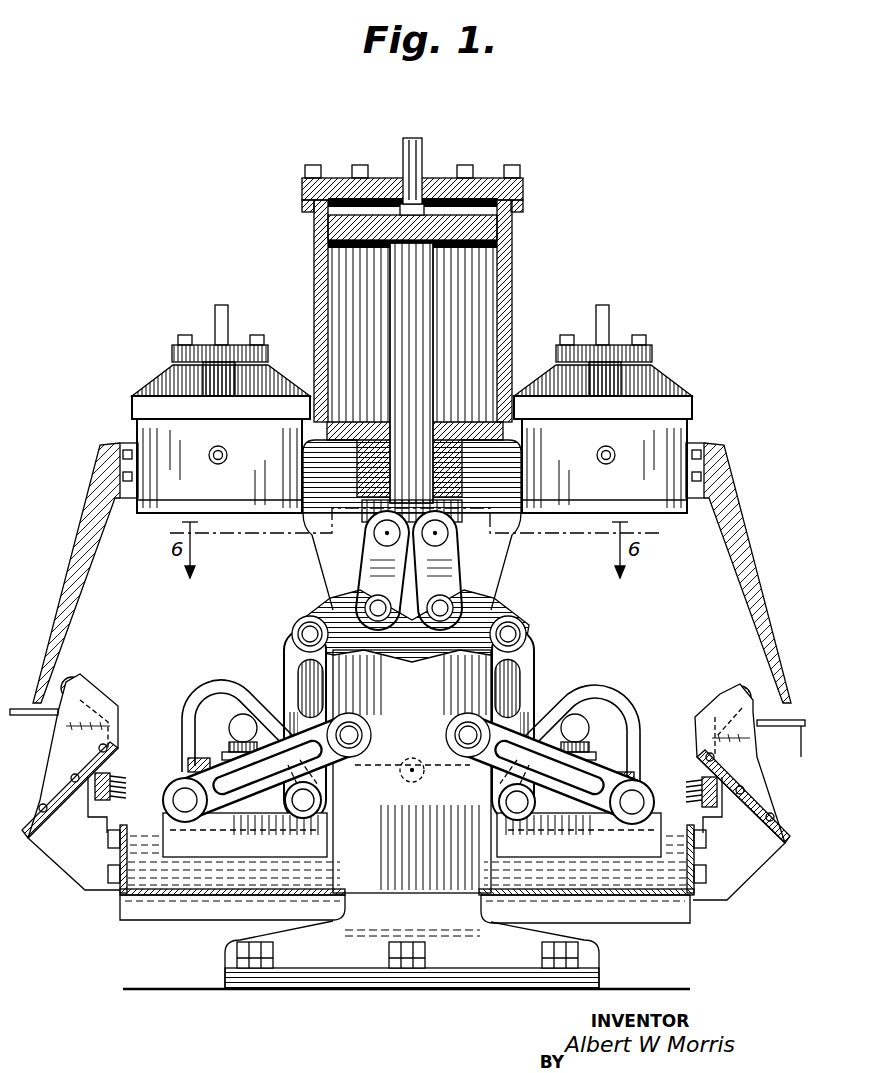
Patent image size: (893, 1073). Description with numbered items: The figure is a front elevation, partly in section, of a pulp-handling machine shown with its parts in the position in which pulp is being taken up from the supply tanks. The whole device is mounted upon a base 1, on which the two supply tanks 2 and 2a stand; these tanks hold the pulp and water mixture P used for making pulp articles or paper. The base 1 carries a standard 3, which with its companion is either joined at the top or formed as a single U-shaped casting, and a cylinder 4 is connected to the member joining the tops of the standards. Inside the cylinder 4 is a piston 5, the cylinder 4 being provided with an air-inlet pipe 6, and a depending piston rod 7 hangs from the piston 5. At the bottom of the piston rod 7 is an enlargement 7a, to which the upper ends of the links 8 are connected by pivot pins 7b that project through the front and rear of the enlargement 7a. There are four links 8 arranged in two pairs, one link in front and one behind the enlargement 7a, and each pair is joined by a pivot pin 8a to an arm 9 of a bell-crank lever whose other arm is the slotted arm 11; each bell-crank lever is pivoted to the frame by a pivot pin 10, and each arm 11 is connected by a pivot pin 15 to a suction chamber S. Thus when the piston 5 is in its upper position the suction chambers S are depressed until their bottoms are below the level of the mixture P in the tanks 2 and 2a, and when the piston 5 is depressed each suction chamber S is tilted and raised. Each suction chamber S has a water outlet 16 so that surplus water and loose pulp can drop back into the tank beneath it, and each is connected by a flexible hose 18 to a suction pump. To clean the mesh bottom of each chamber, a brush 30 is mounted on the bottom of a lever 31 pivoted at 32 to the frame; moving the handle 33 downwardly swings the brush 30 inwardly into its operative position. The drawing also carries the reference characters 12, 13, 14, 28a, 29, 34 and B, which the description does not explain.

The base 1 is at (347, 963).
The supply tank 2 is at (188, 896).
The supply tank 2a is at (673, 912).
The standard 3 is at (409, 688).
The cylinder 4 is at (513, 287).
The piston 5 is at (500, 232).
The air-inlet pipe 6 is at (423, 178).
The piston rod 7 is at (423, 340).
The enlargement 7a is at (372, 520).
The pivot pin 7b is at (385, 537).
The link 8 is at (362, 575).
The pivot pin 8a is at (412, 626).
The arm 9 is at (362, 606).
The pivot pin 10 is at (300, 640).
The arm 11 is at (328, 672).
The lever 12 is at (352, 758).
The lever pivot 13 is at (354, 733).
The lever pin 14 is at (182, 797).
The pivot pin 15 is at (312, 806).
The water outlet 16 is at (240, 726).
The flexible hose 18 is at (209, 690).
The terminal flange 28a is at (213, 371).
The terminal stud 29 is at (228, 323).
The brush 30 is at (118, 774).
The lever 31 is at (94, 705).
The pivot 32 is at (77, 679).
The handle 33 is at (410, 748).
The pin 34 is at (412, 768).
The box B is at (145, 438).
The pulp and water mixture P is at (153, 872).
The suction chamber S is at (660, 813).